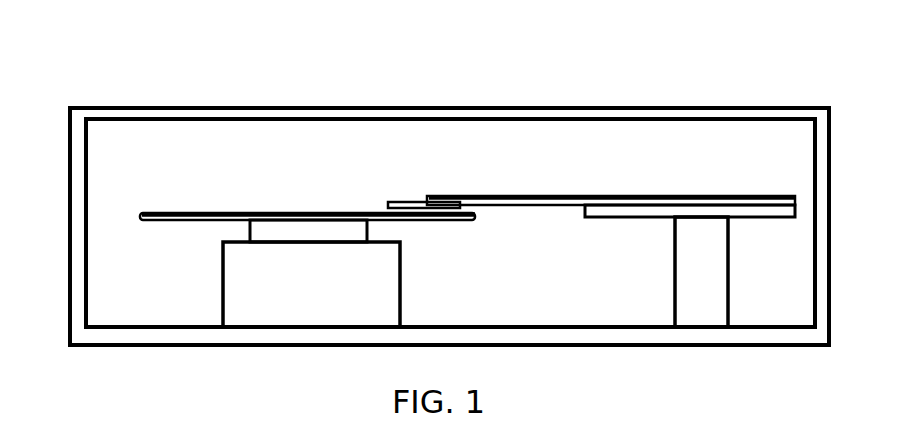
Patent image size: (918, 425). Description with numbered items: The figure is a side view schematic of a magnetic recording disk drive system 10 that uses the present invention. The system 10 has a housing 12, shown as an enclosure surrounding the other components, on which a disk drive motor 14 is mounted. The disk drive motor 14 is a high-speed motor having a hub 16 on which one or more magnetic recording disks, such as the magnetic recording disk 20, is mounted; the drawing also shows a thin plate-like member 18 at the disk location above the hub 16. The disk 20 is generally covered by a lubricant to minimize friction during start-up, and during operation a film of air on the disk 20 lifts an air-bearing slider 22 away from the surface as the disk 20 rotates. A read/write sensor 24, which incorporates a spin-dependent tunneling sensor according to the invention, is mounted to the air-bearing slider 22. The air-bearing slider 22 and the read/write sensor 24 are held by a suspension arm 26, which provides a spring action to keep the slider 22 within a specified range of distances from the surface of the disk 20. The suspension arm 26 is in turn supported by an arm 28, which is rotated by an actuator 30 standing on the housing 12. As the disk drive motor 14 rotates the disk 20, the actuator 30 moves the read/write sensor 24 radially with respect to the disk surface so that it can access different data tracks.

The magnetic recording disk drive system 10 is at (829, 170).
The housing 12 is at (752, 113).
The disk drive motor 14 is at (223, 290).
The hub 16 is at (245, 232).
The first plate 18 is at (219, 212).
The magnetic recording disk 20 is at (333, 212).
The air-bearing slider 22 is at (405, 204).
The read/write sensor 24 is at (445, 199).
The suspension arm 26 is at (565, 199).
The arm 28 is at (682, 210).
The actuator 30 is at (728, 272).